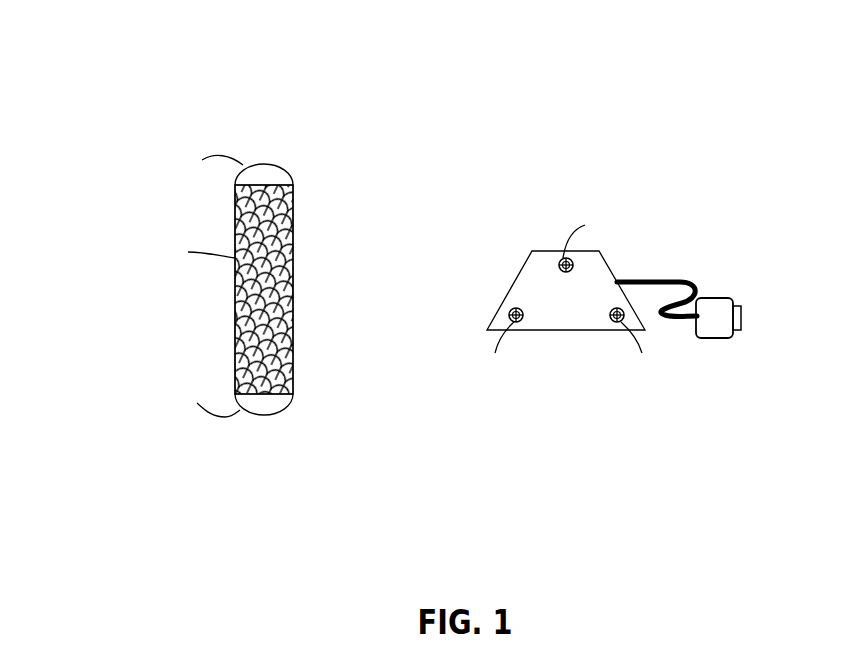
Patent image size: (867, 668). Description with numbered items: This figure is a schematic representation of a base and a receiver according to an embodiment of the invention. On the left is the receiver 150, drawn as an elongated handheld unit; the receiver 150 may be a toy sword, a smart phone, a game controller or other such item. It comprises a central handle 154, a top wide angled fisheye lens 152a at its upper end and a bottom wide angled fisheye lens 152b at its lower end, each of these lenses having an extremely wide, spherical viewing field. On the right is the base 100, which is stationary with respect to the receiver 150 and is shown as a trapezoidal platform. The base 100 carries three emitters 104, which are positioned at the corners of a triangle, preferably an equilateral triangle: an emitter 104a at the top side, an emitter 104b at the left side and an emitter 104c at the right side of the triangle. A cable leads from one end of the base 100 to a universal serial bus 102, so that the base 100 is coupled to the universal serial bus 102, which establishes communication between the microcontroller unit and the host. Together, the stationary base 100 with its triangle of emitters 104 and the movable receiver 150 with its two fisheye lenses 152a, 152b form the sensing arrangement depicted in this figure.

The receiver 150 is at (152, 132).
The top wide angled fisheye lens 152a is at (269, 165).
The bottom wide angled fisheye lens 152b is at (280, 413).
The handle 154 is at (263, 285).
The base 100 is at (665, 162).
The emitters 104 is at (595, 305).
The top side emitter 104a is at (578, 188).
The left side emitter 104b is at (503, 431).
The right side emitter 104c is at (652, 430).
The universal serial bus 102 is at (724, 283).